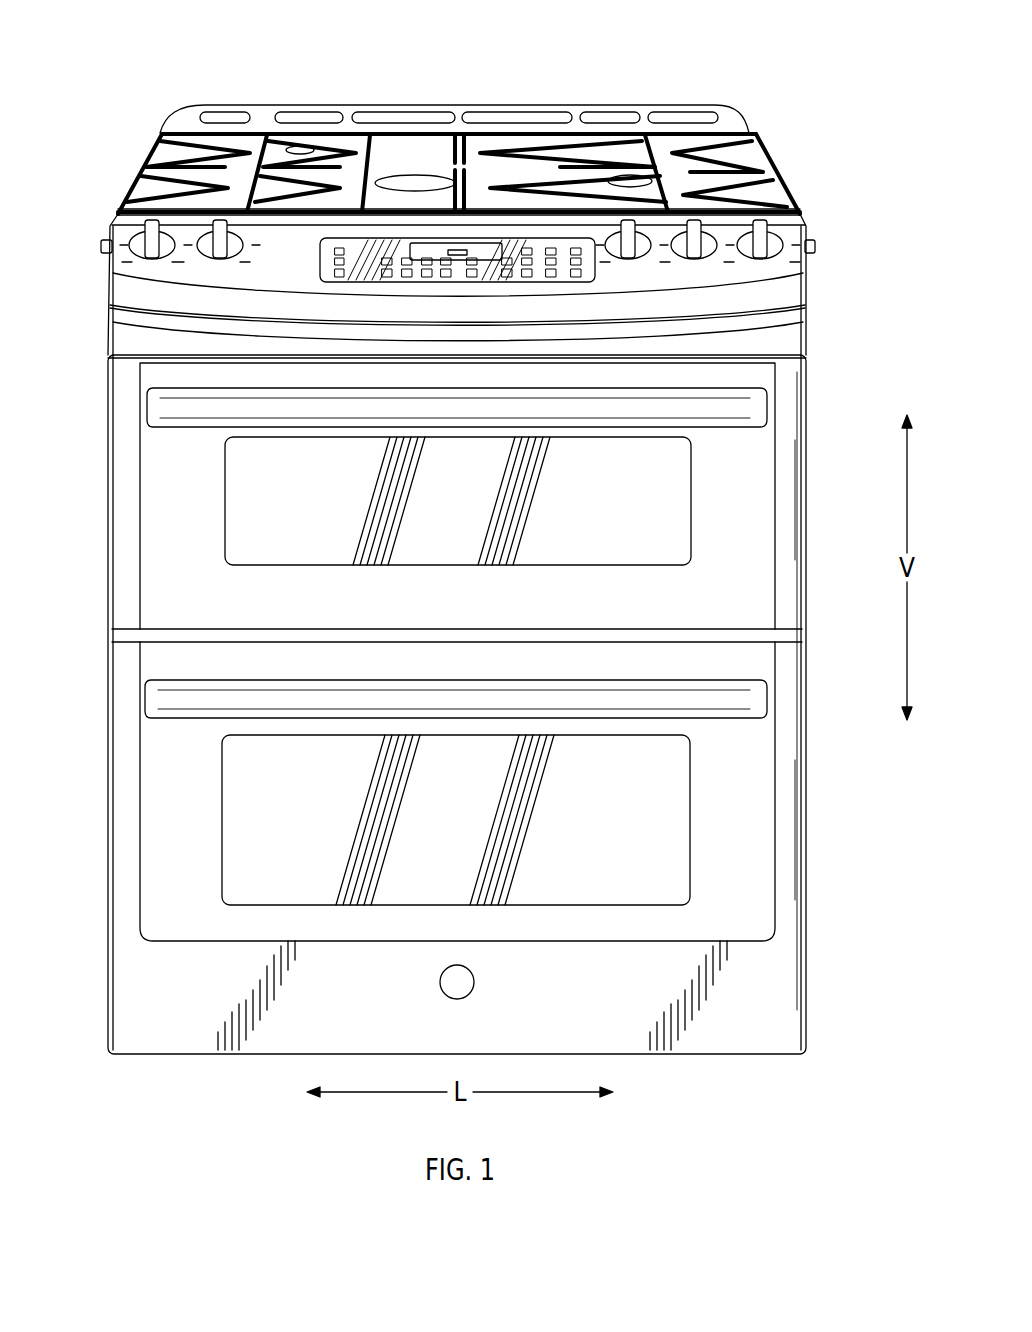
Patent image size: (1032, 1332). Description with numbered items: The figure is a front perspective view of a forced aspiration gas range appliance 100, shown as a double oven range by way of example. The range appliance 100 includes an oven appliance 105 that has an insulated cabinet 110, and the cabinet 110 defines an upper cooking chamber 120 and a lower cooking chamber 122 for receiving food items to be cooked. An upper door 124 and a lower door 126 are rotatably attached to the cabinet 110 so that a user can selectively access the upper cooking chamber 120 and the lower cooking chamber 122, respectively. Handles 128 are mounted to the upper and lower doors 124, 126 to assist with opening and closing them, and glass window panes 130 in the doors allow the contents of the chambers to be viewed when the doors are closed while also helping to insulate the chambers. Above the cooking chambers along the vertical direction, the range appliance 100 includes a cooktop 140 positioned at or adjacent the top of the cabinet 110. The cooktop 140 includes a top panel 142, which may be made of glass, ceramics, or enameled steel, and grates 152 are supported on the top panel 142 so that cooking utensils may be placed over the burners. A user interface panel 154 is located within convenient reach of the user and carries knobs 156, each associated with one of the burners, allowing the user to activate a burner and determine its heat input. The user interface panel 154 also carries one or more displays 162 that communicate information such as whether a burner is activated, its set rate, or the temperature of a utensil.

The range appliance 100 is at (454, 532).
The oven appliance 105 is at (88, 726).
The cabinet 110 is at (782, 343).
The upper cooking chamber 120 is at (752, 508).
The lower cooking chamber 122 is at (752, 862).
The upper door 124 is at (128, 570).
The lower door 126 is at (125, 865).
The handle 128 is at (747, 403).
The glass window pane 130 is at (655, 543).
The cooktop 140 is at (454, 275).
The top panel 142 is at (792, 222).
The grate 152 is at (133, 177).
The user interface panel 154 is at (323, 284).
The knob 156 is at (220, 258).
The display 162 is at (432, 253).